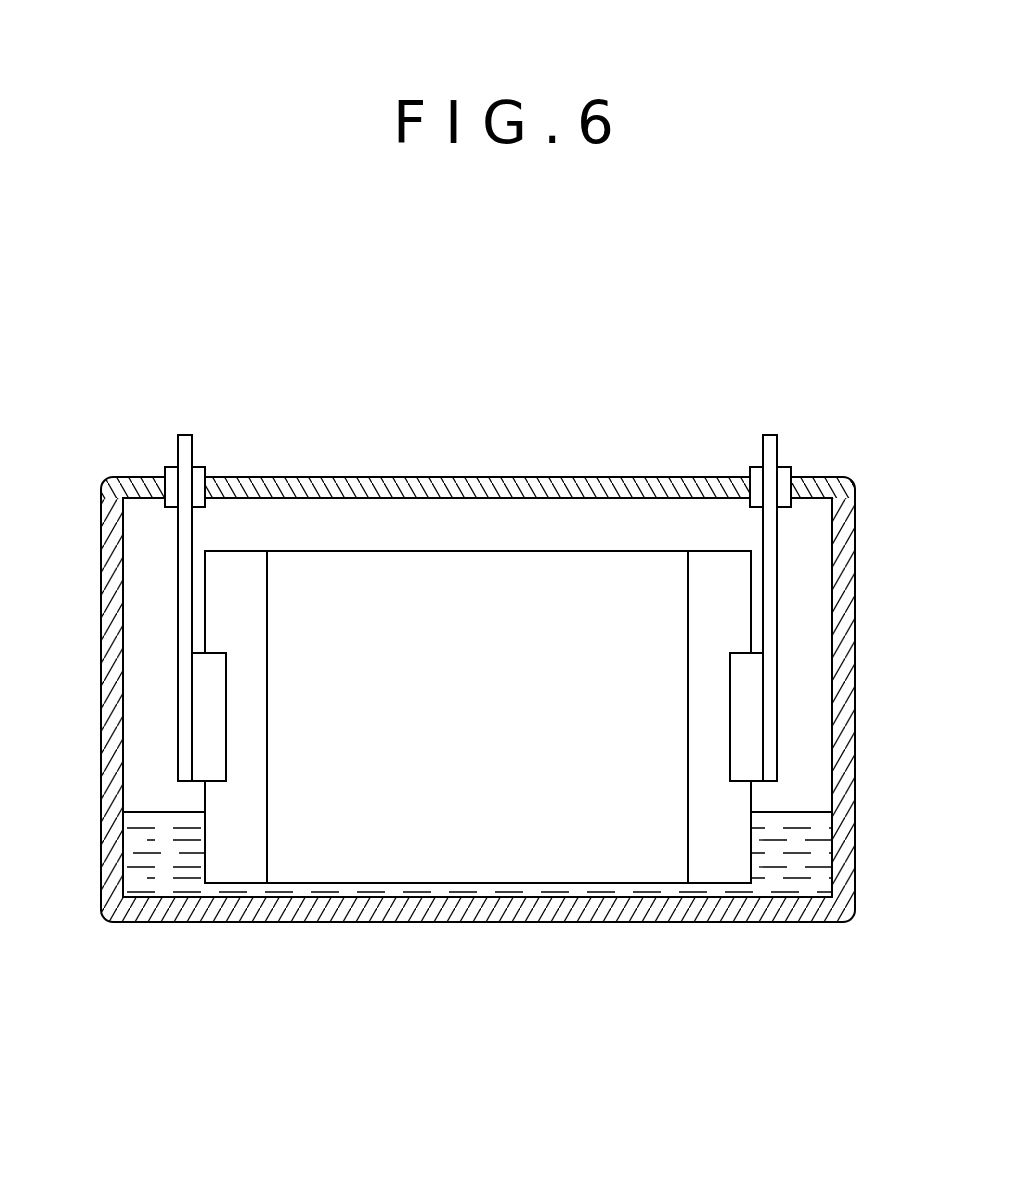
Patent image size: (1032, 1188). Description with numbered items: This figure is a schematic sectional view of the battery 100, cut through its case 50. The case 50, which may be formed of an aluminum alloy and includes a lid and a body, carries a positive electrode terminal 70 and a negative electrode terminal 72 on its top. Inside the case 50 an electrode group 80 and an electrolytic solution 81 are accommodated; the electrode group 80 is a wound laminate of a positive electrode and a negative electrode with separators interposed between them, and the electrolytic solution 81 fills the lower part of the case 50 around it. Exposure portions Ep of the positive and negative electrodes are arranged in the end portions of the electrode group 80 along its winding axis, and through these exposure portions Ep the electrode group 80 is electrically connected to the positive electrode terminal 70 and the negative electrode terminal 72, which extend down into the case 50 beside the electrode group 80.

The battery 100 is at (910, 367).
The case 50 is at (546, 476).
The positive electrode terminal 70 is at (185, 435).
The negative electrode terminal 72 is at (769, 435).
The electrode group 80 is at (425, 657).
The electrolytic solution 81 is at (787, 862).
The exposure portions Ep is at (238, 618).